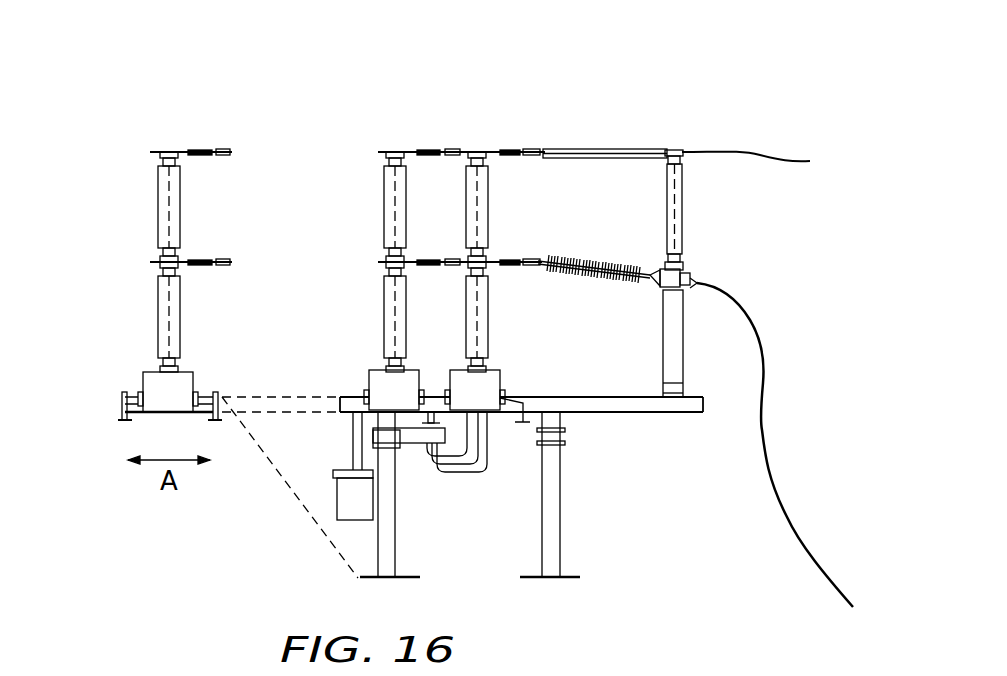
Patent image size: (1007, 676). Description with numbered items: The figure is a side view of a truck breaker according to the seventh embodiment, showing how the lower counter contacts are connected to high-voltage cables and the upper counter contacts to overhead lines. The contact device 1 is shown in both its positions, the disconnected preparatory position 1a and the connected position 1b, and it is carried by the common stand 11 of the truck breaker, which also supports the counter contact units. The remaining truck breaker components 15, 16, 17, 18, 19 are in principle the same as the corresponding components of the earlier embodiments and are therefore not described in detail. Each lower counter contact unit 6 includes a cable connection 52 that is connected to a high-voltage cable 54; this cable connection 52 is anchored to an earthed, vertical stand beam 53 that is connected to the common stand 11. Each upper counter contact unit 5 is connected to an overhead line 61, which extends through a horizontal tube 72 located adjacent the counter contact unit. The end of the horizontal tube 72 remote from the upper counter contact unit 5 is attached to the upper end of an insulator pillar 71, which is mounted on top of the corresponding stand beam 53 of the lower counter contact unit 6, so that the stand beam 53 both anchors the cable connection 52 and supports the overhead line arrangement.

The contact device 1 is at (167, 211).
The disconnected preparatory position 1a is at (386, 149).
The connected position 1b is at (469, 149).
The upper counter contact unit 5 is at (518, 151).
The lower counter contact unit 6 is at (528, 258).
The stand 11 is at (598, 453).
The truck breaker component 15 is at (143, 380).
The truck breaker component 16 is at (500, 375).
The truck breaker component 17 is at (373, 503).
The truck breaker component 18 is at (158, 318).
The truck breaker component 19 is at (158, 208).
The cable connection 52 is at (592, 279).
The stand beam 53 is at (683, 355).
The high-voltage cable 54 is at (763, 427).
The overhead line 61 is at (685, 152).
The insulator pillar 71 is at (683, 208).
The horizontal tube 72 is at (594, 149).